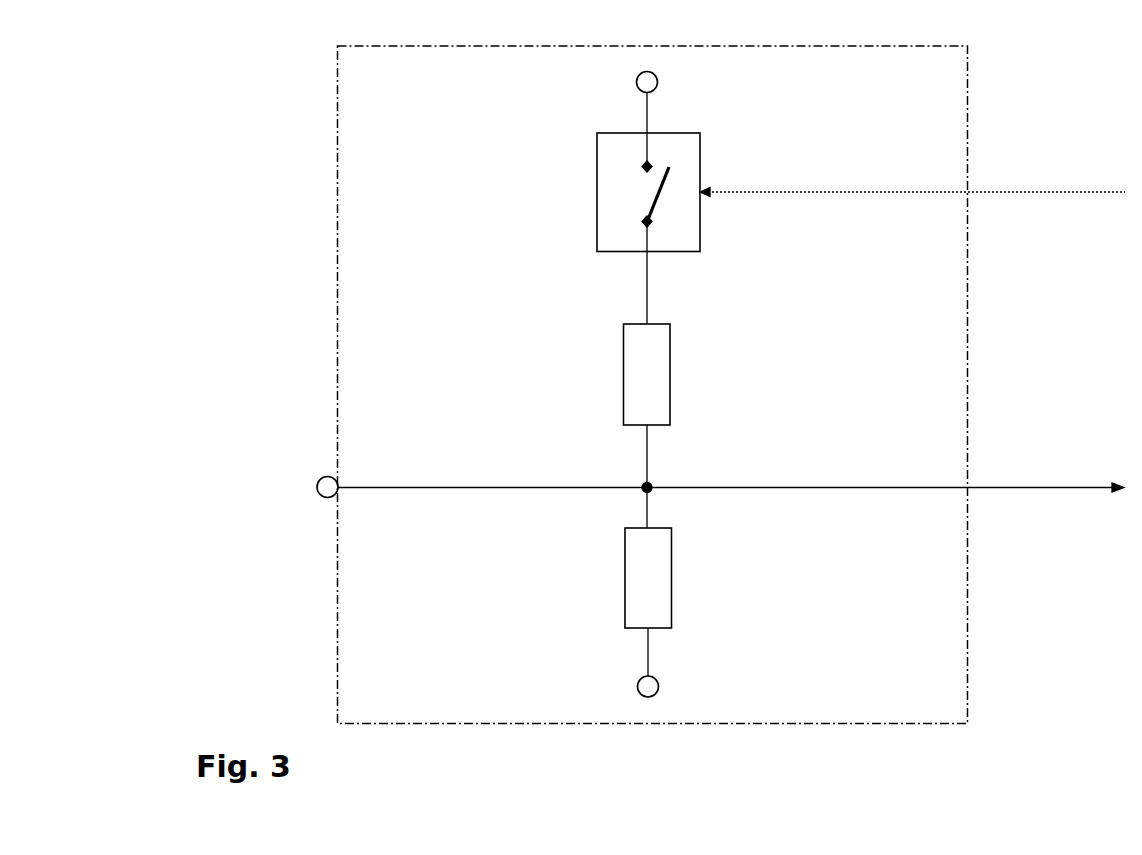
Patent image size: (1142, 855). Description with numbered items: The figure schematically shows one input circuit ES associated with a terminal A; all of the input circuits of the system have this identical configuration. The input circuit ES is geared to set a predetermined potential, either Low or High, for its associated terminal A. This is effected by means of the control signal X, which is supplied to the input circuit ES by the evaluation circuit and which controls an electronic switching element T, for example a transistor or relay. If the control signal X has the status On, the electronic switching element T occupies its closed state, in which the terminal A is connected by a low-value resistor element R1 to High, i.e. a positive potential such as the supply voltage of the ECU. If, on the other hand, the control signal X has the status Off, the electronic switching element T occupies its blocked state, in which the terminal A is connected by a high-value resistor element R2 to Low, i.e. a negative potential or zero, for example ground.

The input circuit ES is at (948, 716).
The electronic switching element T is at (648, 228).
The low-value resistor element R1 is at (647, 406).
The high-value resistor element R2 is at (648, 582).
The terminal A is at (693, 500).
The control signal X is at (912, 178).
The positive potential High is at (685, 101).
The negative or zero potential Low is at (680, 687).